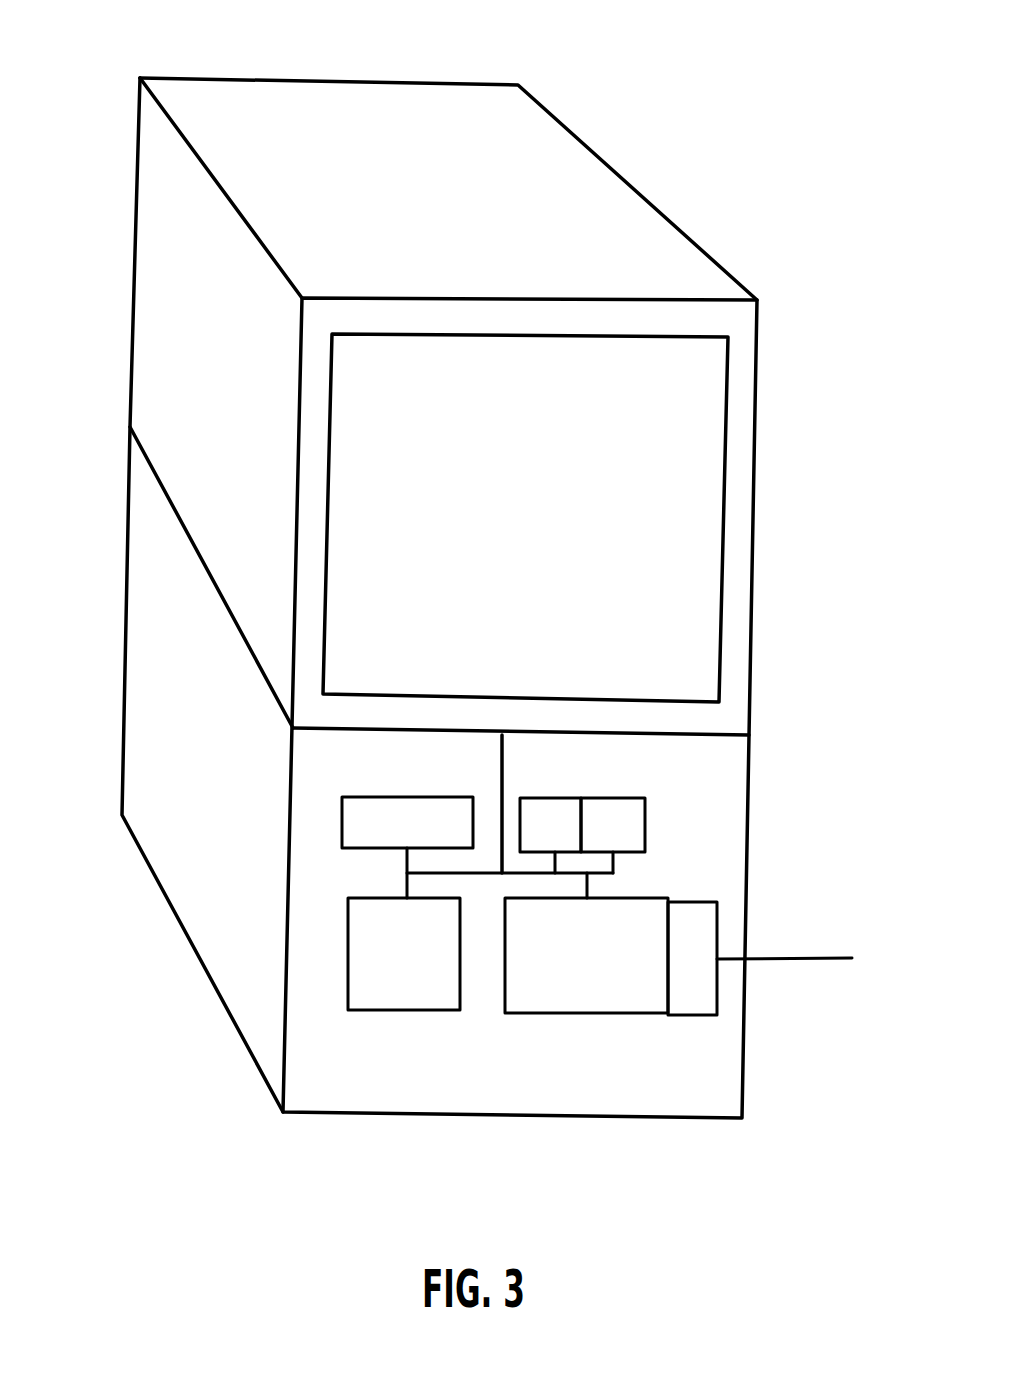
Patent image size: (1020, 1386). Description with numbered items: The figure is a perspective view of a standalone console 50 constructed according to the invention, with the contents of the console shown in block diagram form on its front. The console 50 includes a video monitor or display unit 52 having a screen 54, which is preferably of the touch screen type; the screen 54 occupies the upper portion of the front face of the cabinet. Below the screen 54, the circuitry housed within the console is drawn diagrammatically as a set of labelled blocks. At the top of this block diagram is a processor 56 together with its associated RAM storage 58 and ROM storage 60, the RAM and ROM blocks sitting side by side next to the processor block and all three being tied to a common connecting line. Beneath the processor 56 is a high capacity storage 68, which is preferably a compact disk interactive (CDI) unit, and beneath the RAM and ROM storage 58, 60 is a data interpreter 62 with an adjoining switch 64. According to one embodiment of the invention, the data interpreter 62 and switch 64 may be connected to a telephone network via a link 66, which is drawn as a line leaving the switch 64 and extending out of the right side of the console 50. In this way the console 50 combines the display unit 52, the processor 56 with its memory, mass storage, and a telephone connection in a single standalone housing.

The standalone console 50 is at (683, 82).
The video monitor or display unit 52 is at (147, 293).
The screen 54 is at (673, 467).
The processor 56 is at (408, 795).
The RAM storage 58 is at (553, 797).
The ROM storage 60 is at (610, 797).
The data interpreter 62 is at (587, 1005).
The switch 64 is at (690, 1005).
The link 66 is at (805, 957).
The high capacity storage 68 is at (419, 1005).